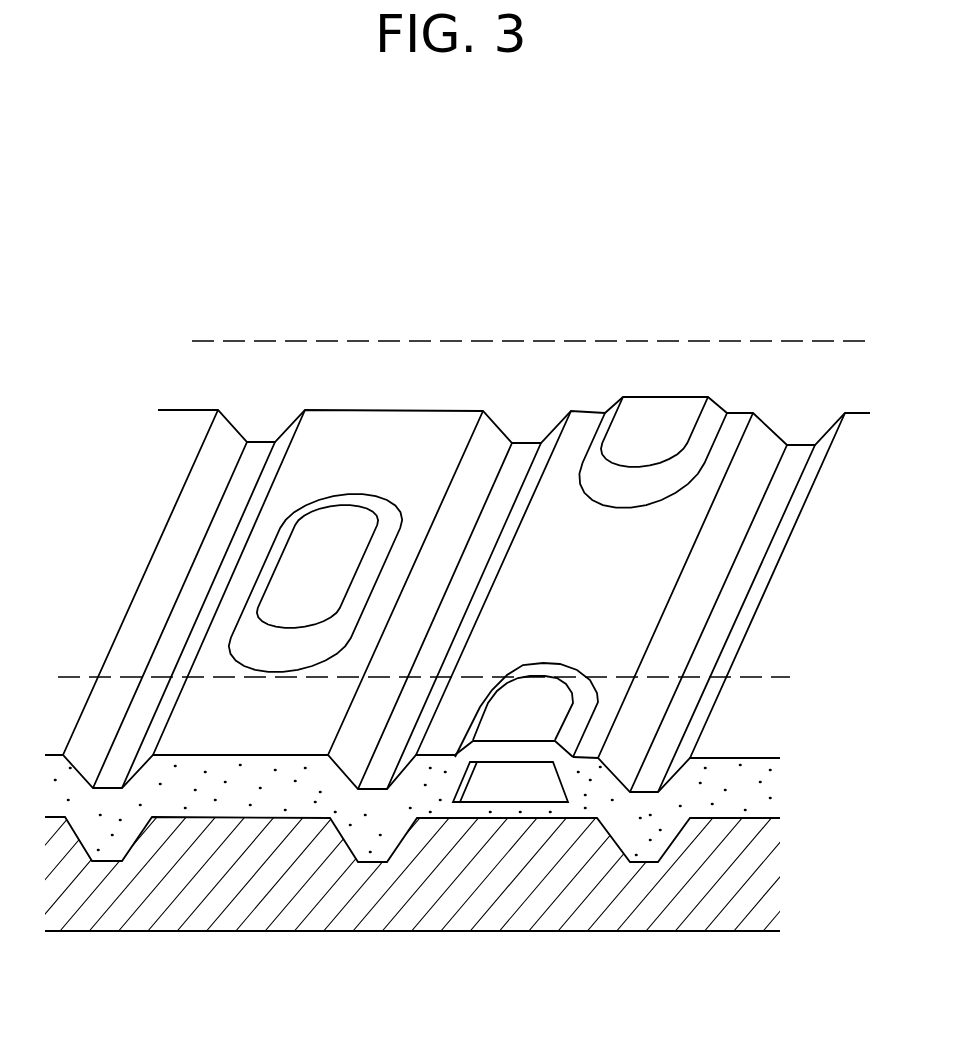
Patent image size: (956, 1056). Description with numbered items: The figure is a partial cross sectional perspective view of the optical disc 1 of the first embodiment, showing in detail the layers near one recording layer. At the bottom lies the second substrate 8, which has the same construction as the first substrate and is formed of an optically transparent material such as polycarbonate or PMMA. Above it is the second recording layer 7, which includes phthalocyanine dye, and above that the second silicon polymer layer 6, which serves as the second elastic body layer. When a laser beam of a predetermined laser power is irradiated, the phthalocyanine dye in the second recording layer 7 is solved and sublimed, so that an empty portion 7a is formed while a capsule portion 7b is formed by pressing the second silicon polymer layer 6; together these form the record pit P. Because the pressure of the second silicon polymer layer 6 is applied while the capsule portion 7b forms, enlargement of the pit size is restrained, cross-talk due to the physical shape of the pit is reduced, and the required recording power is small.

The optical disc 1 is at (400, 428).
The second silicon polymer layer 6 is at (795, 681).
The second recording layer 7 is at (795, 763).
The empty portion 7a is at (519, 783).
The capsule portion 7b is at (528, 718).
The second substrate 8 is at (795, 823).
The record pit P is at (555, 708).